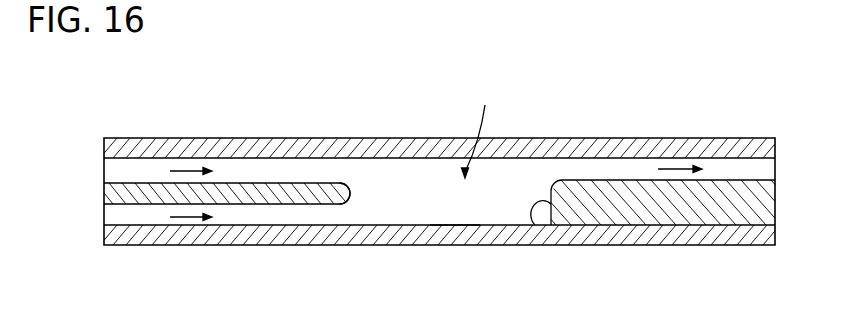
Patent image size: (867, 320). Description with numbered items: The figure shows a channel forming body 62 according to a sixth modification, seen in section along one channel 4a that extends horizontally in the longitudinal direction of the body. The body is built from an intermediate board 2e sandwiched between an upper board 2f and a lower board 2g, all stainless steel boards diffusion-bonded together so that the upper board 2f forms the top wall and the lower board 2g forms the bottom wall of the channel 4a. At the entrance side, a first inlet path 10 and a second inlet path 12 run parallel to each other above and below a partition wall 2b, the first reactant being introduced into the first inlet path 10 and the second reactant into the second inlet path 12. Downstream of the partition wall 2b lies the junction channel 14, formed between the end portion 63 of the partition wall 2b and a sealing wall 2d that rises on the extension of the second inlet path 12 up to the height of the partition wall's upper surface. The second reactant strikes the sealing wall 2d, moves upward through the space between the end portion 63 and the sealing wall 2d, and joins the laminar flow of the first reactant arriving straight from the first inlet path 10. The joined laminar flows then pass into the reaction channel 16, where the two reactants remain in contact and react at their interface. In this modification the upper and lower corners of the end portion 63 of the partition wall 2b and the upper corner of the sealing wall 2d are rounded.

The channel forming body 62 is at (472, 185).
The first inlet path 10 is at (135, 170).
The second inlet path 12 is at (147, 215).
The junction channel 14 is at (440, 195).
The reaction channel 16 is at (632, 172).
The partition wall 2b is at (228, 195).
The sealing wall 2d is at (536, 220).
The intermediate board 2e is at (775, 200).
The upper board 2f is at (545, 138).
The lower board 2g is at (498, 245).
The channel 4a is at (480, 129).
The end portion 63 is at (337, 195).